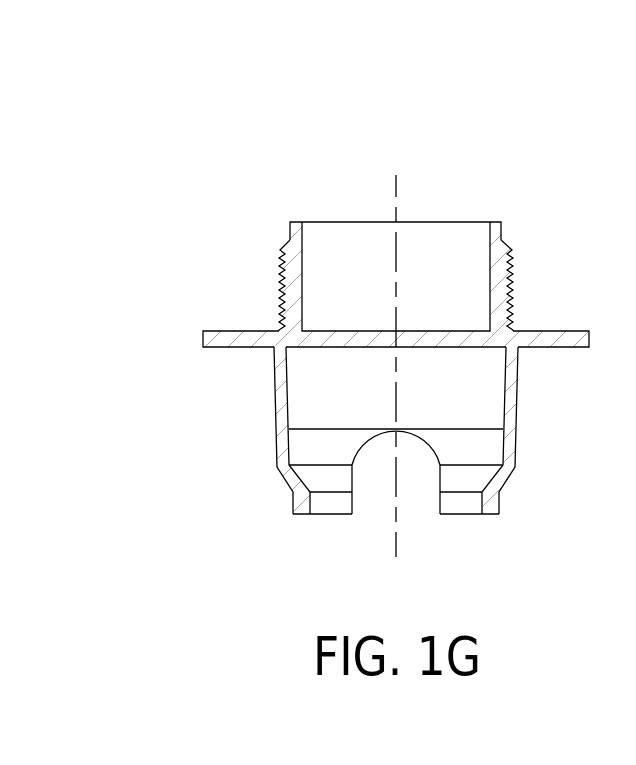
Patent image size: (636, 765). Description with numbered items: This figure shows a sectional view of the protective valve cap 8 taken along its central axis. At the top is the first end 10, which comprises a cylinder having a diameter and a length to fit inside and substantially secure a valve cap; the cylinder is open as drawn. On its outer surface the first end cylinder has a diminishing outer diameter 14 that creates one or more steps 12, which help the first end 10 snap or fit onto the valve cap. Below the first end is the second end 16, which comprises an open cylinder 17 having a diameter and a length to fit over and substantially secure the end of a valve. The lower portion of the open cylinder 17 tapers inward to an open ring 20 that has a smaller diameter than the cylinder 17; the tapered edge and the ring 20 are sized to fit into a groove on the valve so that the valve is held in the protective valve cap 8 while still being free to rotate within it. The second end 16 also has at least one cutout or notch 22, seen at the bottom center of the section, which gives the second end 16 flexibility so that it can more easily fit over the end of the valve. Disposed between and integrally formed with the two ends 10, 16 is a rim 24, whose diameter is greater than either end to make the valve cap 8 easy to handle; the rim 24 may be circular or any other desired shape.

The protective valve cap 8 is at (370, 150).
The first end 10 is at (392, 220).
The step 12 is at (287, 251).
The diminishing outer diameter 14 is at (433, 222).
The second end 16 is at (375, 468).
The open cylinder 17 is at (272, 416).
The open ring 20 is at (298, 516).
The cutout or notch 22 is at (422, 503).
The rim 24 is at (203, 338).